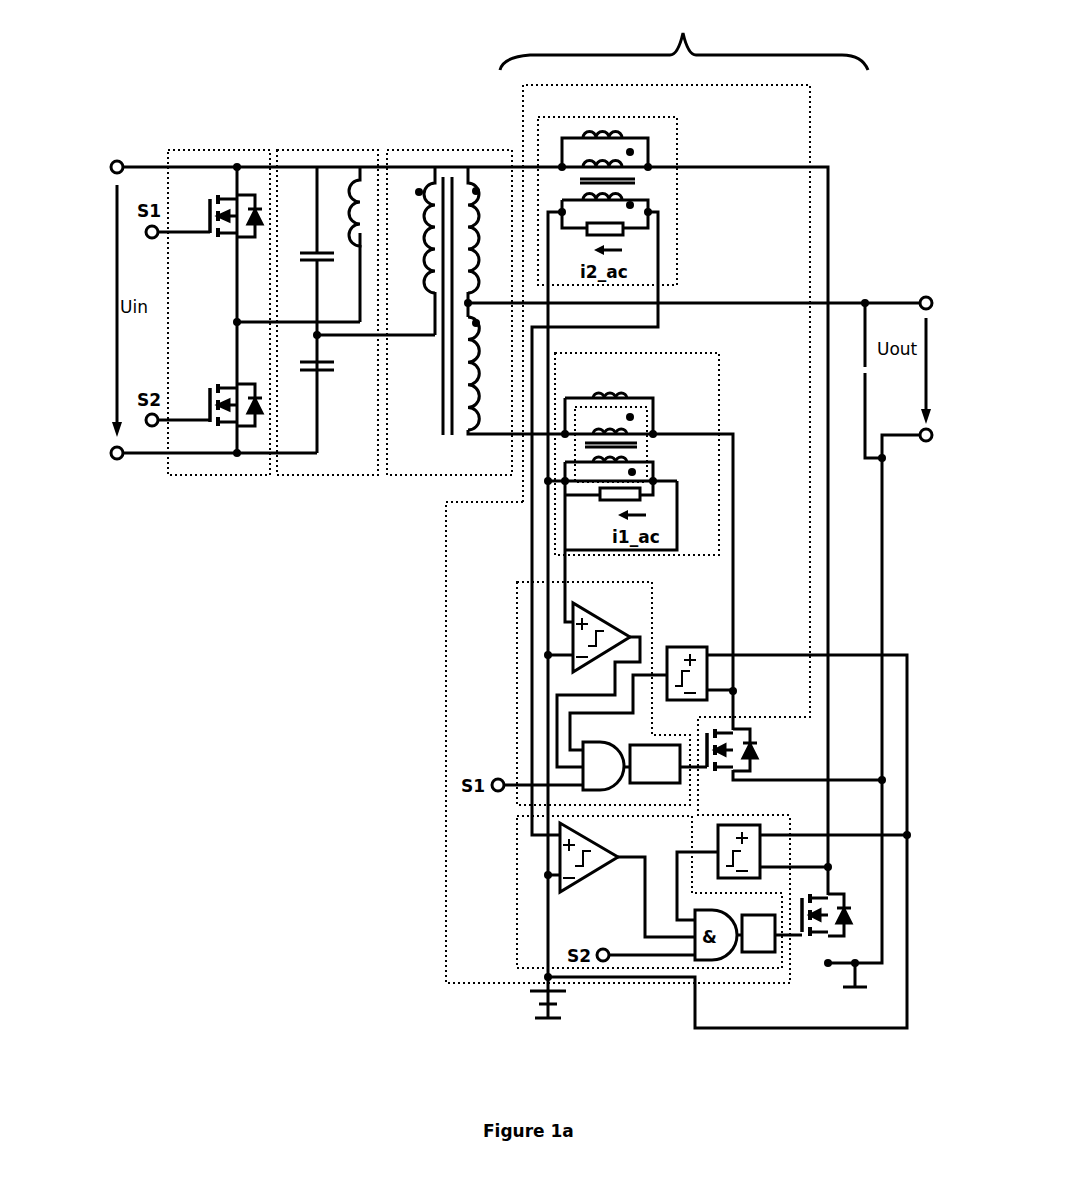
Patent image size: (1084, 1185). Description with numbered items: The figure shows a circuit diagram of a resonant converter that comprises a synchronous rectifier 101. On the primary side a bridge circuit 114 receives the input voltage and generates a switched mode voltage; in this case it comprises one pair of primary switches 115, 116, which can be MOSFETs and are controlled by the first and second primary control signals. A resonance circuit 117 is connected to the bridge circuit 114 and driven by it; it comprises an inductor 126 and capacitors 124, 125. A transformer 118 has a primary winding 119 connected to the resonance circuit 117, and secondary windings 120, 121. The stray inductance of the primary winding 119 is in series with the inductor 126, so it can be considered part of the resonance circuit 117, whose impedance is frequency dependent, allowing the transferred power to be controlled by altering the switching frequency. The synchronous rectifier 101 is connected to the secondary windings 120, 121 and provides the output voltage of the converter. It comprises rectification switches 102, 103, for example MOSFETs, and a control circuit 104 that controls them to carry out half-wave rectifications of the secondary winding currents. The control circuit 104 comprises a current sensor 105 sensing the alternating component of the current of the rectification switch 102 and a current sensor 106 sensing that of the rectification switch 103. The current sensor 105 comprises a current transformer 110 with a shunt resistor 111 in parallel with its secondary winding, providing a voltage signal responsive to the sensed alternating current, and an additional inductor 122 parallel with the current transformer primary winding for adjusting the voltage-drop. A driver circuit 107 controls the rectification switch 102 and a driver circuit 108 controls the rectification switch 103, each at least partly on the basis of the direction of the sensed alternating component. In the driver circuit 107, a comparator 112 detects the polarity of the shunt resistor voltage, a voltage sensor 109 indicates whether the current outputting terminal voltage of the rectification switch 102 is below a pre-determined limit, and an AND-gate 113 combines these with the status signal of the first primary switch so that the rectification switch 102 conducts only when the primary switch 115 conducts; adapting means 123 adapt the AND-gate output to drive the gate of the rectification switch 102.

The synchronous rectifier 101 is at (684, 416).
The rectification switch 102 is at (722, 772).
The rectification switch 103 is at (820, 937).
The control circuit 104 is at (446, 622).
The current sensor 105 is at (720, 420).
The current sensor 106 is at (678, 153).
The driver circuit 107 is at (516, 702).
The driver circuit 108 is at (516, 910).
The voltage sensor 109 is at (676, 645).
The current transformer 110 is at (650, 441).
The shunt resistor 111 is at (612, 502).
The comparator 112 is at (588, 610).
The AND-gate 113 is at (592, 742).
The bridge circuit 114 is at (203, 150).
The primary switch 115 is at (227, 240).
The primary switch 116 is at (228, 384).
The resonance circuit 117 is at (287, 150).
The transformer 118 is at (407, 150).
The primary winding 119 is at (432, 262).
The secondary winding 120 is at (464, 262).
The secondary winding 121 is at (470, 397).
The additional inductor 122 is at (597, 393).
The adapting means 123 is at (655, 764).
The capacitor 124 is at (312, 250).
The capacitor 125 is at (325, 375).
The inductor 126 is at (350, 245).